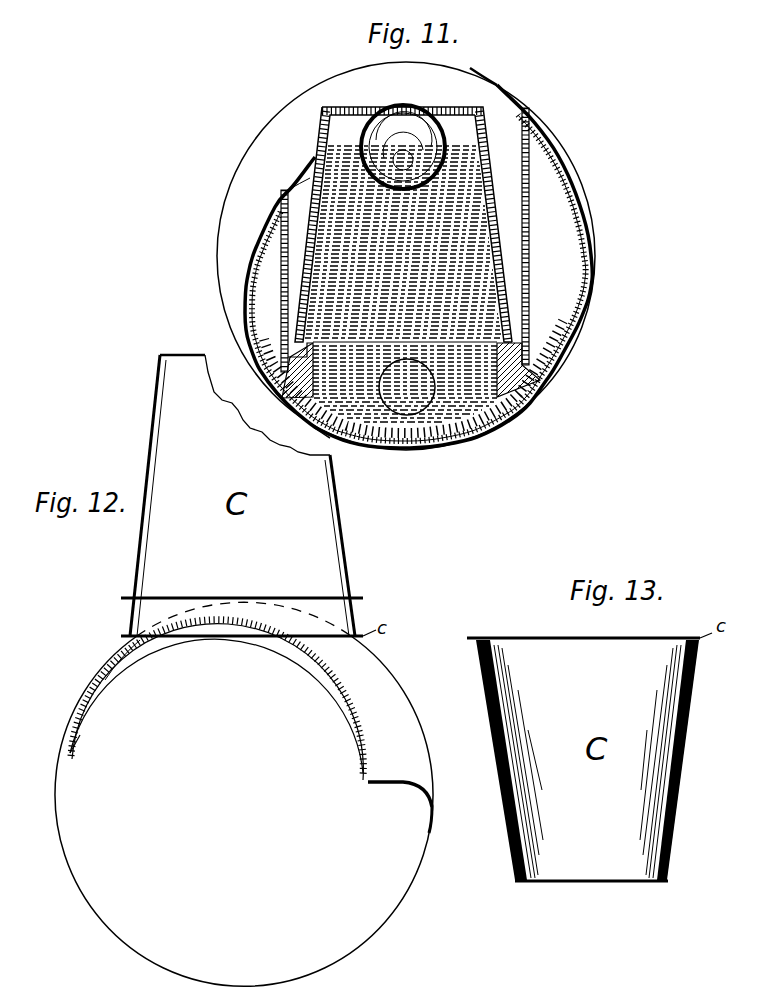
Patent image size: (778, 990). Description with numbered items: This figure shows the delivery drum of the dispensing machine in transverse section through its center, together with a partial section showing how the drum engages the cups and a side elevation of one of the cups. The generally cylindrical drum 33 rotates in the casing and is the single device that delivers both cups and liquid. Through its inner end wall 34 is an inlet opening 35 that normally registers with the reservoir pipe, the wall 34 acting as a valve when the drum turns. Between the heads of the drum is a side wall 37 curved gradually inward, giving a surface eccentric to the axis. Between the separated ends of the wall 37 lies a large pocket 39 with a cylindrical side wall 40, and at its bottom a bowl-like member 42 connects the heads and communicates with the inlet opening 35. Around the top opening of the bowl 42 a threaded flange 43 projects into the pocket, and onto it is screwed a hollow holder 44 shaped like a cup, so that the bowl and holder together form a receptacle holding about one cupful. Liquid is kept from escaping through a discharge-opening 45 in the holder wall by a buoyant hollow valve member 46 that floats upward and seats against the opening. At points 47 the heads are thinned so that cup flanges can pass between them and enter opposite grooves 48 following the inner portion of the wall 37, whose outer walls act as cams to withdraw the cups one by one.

In FIG. 11, the drum 33 is at (503, 80).
In FIG. 12, the drum 33 is at (244, 811).
In FIG. 11, the inner end wall 34 is at (219, 212).
In FIG. 12, the inner end wall 34 is at (382, 682).
In FIG. 11, the inlet opening 35 is at (430, 410).
In FIG. 11, the side wall 37 is at (543, 386).
In FIG. 12, the side wall 37 is at (348, 732).
In FIG. 11, the pocket 39 is at (302, 197).
In FIG. 11, the cylindrical side wall 40 is at (281, 253).
In FIG. 11, the bowl-like member 42 is at (512, 398).
In FIG. 11, the threaded flange 43 is at (508, 333).
In FIG. 11, the hollow holder 44 is at (323, 133).
In FIG. 11, the discharge-opening 45 is at (433, 113).
In FIG. 11, the valve member 46 is at (387, 110).
In FIG. 11, the thinned points of the heads 47 is at (330, 438).
In FIG. 12, the thinned points of the heads 47 is at (76, 717).
In FIG. 11, the grooves 48 is at (263, 212).
In FIG. 12, the grooves 48 is at (110, 671).